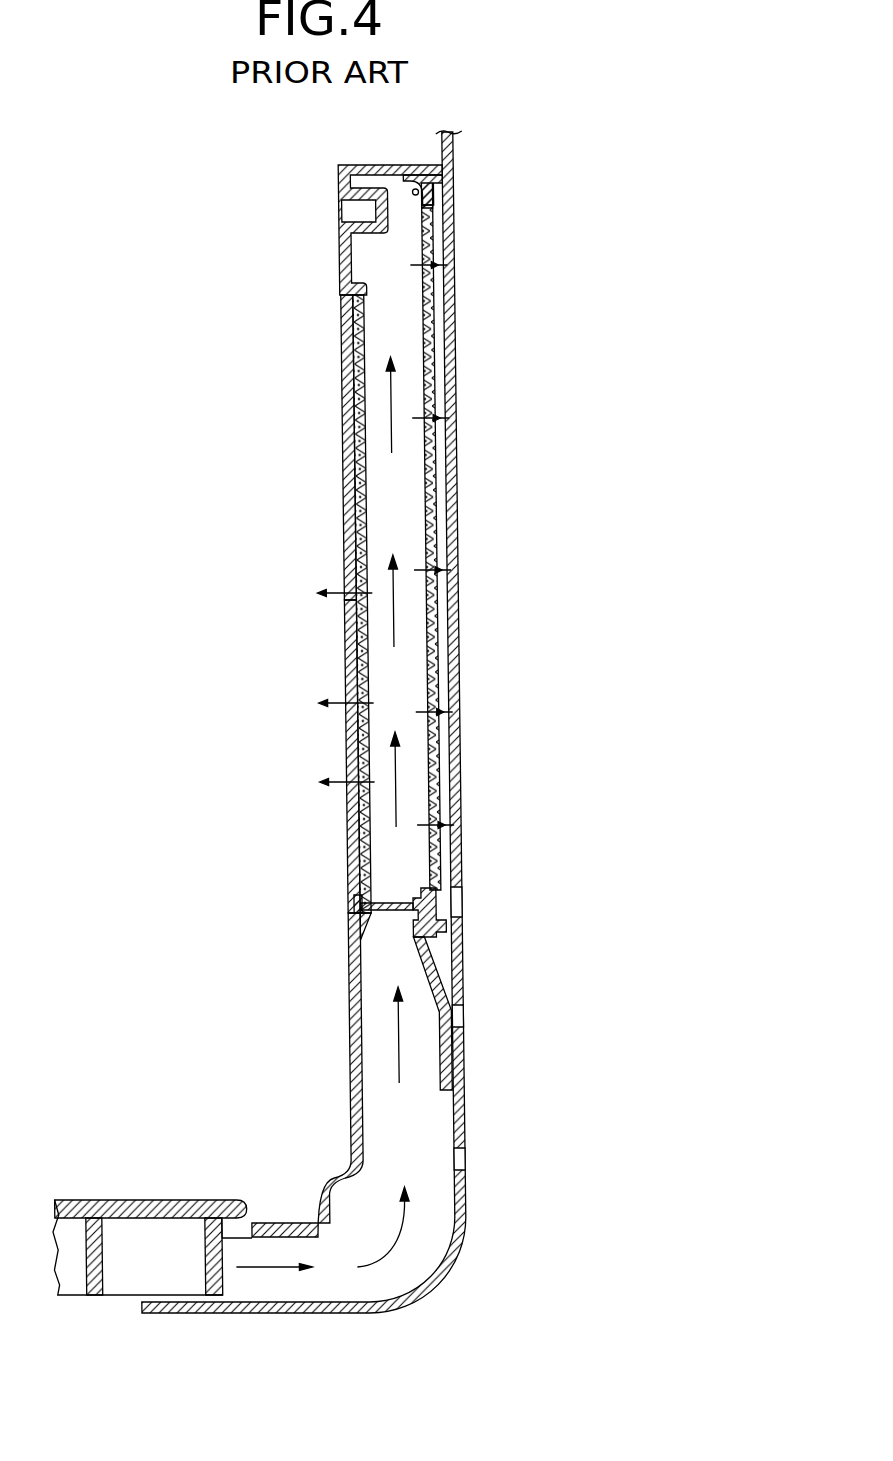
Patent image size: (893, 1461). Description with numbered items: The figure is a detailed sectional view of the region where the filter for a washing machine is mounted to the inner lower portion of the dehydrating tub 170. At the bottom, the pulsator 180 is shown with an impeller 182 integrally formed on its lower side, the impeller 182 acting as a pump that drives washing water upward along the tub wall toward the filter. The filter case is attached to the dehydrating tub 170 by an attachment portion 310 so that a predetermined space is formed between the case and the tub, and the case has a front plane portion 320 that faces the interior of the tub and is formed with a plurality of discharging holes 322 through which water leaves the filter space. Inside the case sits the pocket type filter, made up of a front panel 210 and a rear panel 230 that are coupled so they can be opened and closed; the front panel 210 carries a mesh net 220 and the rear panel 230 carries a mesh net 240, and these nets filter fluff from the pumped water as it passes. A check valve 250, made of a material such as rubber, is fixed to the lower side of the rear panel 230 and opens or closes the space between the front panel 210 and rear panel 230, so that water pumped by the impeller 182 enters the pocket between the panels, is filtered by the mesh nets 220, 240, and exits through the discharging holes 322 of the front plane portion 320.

The dehydrating tub 170 is at (457, 777).
The pulsator 180 is at (165, 1212).
The impeller 182 is at (117, 1272).
The front panel 210 is at (340, 263).
The mesh net 220 is at (350, 417).
The rear panel 230 is at (433, 202).
The mesh net 240 is at (430, 392).
The check valve 250 is at (390, 905).
The attachment portion 310 is at (352, 1047).
The front plane portion 320 is at (350, 830).
The discharging holes 322 is at (347, 517).